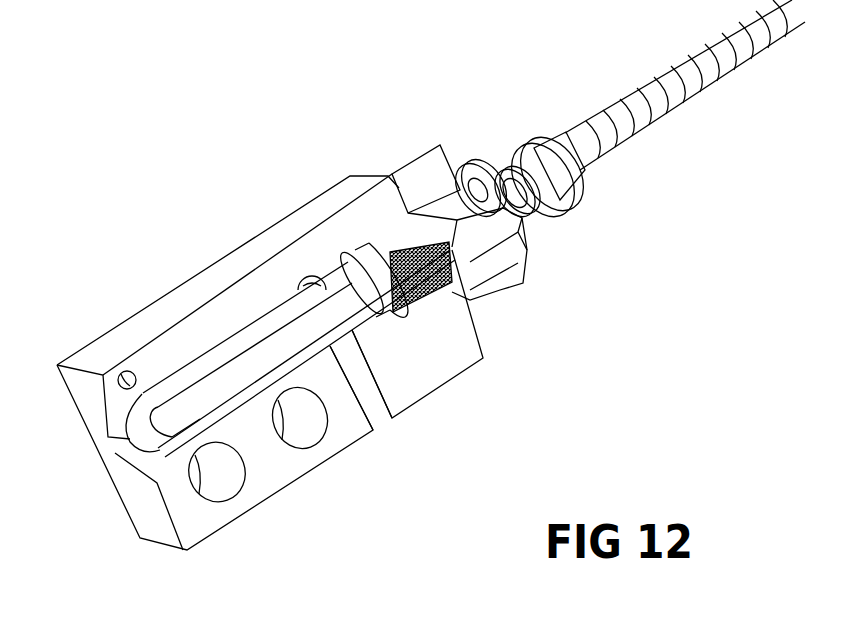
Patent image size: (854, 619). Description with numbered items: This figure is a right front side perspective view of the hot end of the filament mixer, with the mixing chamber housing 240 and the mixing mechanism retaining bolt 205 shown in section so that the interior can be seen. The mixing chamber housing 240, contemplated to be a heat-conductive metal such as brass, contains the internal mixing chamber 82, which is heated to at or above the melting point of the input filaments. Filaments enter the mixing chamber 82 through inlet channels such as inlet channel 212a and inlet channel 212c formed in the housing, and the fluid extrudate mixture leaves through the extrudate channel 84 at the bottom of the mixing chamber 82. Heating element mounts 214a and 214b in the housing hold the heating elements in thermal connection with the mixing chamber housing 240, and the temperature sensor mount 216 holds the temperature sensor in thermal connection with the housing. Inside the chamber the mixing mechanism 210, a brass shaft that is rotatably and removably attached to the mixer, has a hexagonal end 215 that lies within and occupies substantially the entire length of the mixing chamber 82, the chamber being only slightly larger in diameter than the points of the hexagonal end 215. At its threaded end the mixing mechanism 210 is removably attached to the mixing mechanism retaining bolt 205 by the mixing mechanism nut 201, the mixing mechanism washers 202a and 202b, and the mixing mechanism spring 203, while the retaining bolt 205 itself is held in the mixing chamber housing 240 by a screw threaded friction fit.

The mixing chamber 82 is at (225, 410).
The extrudate channel 84 is at (117, 442).
The mixing mechanism nut 201 is at (545, 135).
The mixing mechanism washer 202a is at (562, 212).
The mixing mechanism washer 202b is at (468, 167).
The mixing mechanism spring 203 is at (537, 222).
The mixing mechanism retaining bolt 205 is at (427, 177).
The mixing mechanism 210 is at (313, 150).
The inlet channel 212a is at (387, 418).
The inlet channel 212c is at (310, 267).
The heating element mount 214a is at (317, 435).
The heating element mount 214b is at (220, 488).
The hexagonal end 215 is at (222, 360).
The temperature sensor mount 216 is at (122, 378).
The mixing chamber housing 240 is at (252, 255).